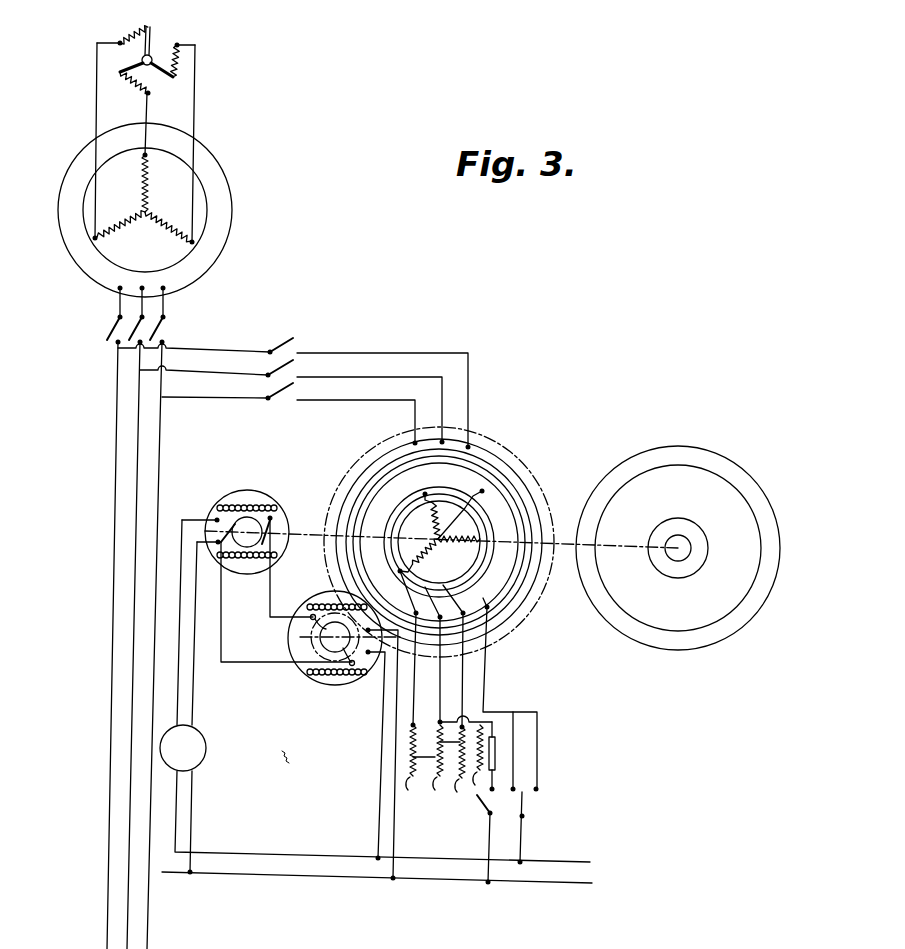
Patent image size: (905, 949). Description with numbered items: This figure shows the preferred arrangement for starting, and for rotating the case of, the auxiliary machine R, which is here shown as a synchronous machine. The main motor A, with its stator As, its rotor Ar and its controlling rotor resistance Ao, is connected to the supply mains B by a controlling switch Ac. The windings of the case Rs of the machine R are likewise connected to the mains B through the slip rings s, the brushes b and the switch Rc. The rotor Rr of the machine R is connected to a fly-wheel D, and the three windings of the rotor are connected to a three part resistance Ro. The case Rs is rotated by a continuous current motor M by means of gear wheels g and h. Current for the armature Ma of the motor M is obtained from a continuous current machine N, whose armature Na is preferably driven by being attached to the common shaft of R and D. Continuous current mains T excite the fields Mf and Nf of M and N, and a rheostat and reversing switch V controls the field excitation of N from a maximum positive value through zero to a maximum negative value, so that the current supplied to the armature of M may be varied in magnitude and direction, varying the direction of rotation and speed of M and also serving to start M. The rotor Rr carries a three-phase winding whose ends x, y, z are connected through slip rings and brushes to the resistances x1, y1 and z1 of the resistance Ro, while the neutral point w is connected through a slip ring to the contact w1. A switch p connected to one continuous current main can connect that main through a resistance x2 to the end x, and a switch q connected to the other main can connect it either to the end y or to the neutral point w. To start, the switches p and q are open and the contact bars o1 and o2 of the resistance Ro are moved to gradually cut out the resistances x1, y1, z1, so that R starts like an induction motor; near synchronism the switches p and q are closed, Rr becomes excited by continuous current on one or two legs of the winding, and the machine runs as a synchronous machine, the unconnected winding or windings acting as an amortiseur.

The controlling rotor resistance Ao is at (160, 51).
The main motor A is at (192, 197).
The rotor Ar is at (144, 144).
The stator As is at (228, 238).
The controlling switch Ac is at (153, 328).
The supply mains B is at (133, 572).
The switch Rc is at (293, 381).
The brushes b is at (427, 440).
The gear wheel h is at (326, 508).
The case Rs is at (370, 483).
The auxiliary machine R is at (490, 485).
The rotor Rr is at (439, 533).
The slip rings s is at (482, 491).
The end of winding z is at (414, 649).
The end of winding y is at (438, 656).
The end of winding x is at (459, 657).
The neutral point w is at (510, 695).
The contact w1 is at (538, 789).
The three part resistance Ro is at (433, 735).
The resistance z1 is at (411, 769).
The resistance y1 is at (437, 770).
The resistance x1 is at (460, 770).
The contact bar o1 is at (424, 750).
The contact bar o2 is at (450, 736).
The resistance x2 is at (470, 727).
The switch p is at (488, 817).
The switch q is at (523, 818).
The continuous current mains T is at (330, 865).
The rheostat and reversing switch V is at (375, 696).
The continuous current machine N is at (247, 516).
The field Nf is at (228, 500).
The armature Na is at (267, 589).
The continuous current motor M is at (344, 651).
The field Mf is at (315, 600).
The armature Ma is at (335, 637).
The gear wheel g is at (310, 634).
The fly-wheel D is at (717, 453).